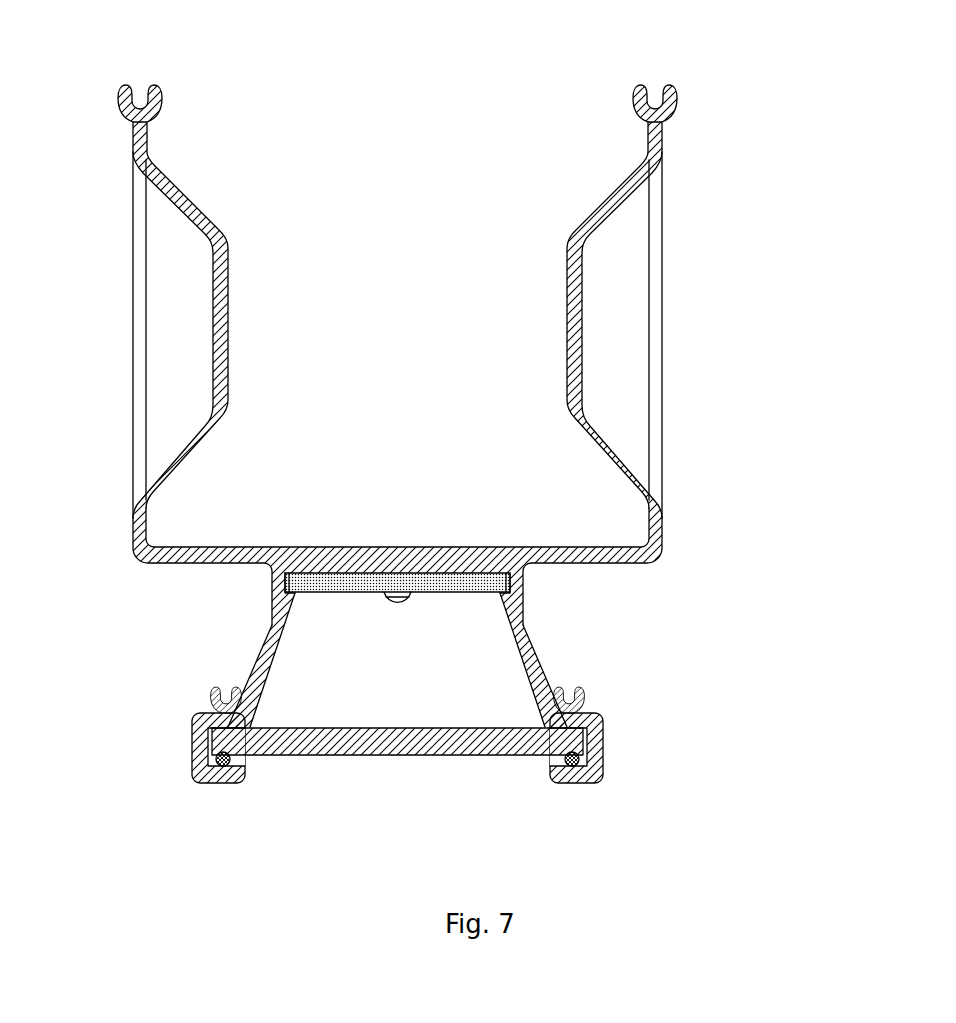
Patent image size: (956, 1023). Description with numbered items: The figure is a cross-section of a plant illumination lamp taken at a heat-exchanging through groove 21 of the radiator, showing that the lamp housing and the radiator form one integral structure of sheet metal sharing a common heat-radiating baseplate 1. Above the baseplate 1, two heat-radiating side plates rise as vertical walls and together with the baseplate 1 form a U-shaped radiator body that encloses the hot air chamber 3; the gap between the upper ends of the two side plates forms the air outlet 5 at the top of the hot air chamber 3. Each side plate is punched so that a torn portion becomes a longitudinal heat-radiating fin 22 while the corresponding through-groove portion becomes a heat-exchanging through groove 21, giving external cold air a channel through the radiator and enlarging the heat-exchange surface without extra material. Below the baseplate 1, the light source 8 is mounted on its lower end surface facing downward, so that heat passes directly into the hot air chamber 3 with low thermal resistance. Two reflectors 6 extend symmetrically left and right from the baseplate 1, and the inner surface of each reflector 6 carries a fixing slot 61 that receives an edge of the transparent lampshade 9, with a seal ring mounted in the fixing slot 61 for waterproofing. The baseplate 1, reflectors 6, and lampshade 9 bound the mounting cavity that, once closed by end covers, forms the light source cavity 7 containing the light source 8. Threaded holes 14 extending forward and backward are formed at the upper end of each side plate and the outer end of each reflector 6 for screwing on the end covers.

The air outlet 5 is at (409, 105).
The threaded holes 14 is at (655, 100).
The heat-exchanging through grooves 21 is at (655, 222).
The heat-radiating fins 22 is at (580, 305).
The hot air chamber 3 is at (507, 408).
The heat-radiating baseplate 1 is at (563, 557).
The light source 8 is at (313, 583).
The reflectors 6 is at (258, 658).
The fixing slot 61 is at (210, 743).
The lampshade 9 is at (327, 740).
The light source cavity 7 is at (443, 697).